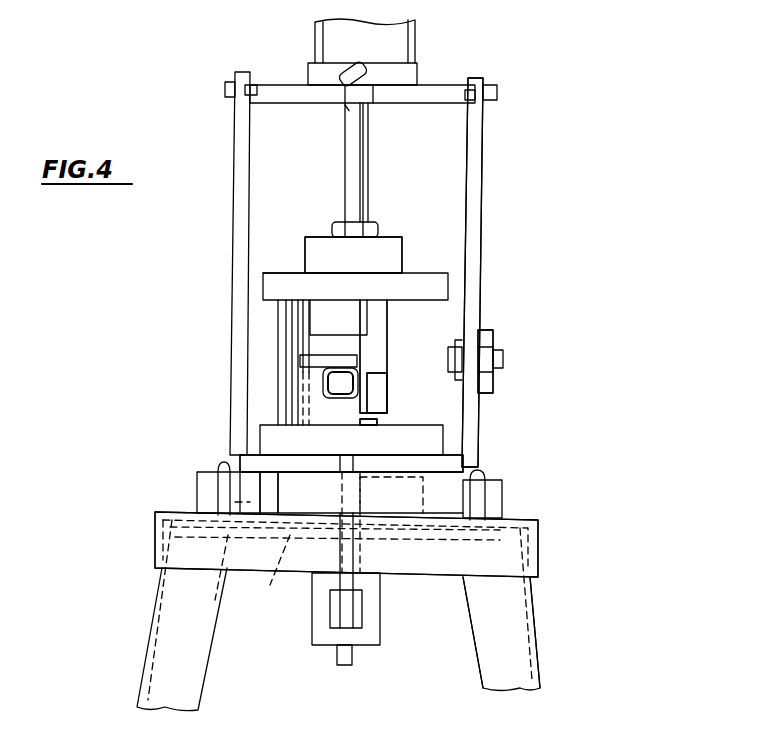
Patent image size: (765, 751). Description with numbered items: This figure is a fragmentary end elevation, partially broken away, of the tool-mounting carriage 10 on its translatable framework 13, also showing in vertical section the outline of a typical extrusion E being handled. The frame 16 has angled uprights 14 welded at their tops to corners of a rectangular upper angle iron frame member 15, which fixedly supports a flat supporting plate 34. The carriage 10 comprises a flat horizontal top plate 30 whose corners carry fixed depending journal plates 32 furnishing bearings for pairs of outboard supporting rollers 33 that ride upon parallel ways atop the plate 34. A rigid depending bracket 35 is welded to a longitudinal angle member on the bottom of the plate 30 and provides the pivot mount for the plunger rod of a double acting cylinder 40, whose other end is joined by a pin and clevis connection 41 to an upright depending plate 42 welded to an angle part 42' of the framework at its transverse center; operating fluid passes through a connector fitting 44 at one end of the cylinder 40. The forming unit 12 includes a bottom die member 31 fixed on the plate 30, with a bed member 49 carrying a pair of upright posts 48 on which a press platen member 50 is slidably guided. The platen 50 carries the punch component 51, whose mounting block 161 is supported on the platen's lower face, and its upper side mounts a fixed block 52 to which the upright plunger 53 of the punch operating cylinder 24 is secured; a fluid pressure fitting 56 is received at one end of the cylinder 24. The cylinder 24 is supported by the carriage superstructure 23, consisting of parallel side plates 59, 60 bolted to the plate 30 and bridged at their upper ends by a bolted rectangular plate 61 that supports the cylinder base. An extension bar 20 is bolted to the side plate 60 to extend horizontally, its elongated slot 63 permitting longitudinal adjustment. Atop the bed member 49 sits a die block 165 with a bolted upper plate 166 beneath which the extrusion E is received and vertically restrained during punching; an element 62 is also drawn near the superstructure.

The reciprocable carriage 10 is at (487, 455).
The forming unit 12 is at (413, 272).
The translatable framework 13 is at (538, 620).
The angled uprights 14 is at (158, 665).
The upper angle iron frame member 15 is at (155, 538).
The frame 16 is at (543, 538).
The extension bar 20 is at (495, 383).
The carriage superstructure 23 is at (487, 271).
The punch operating cylinder 24 is at (345, 45).
The top plate 30 is at (398, 452).
The bottom die member 31 is at (336, 431).
The journal plates 32 is at (248, 473).
The outboard supporting rollers 33 is at (212, 490).
The flat supporting plate 34 is at (252, 576).
The depending bracket 35 is at (342, 490).
The double acting cylinder 40 is at (312, 630).
The pin and clevis connection 41 is at (358, 620).
The upright depending plate 42 is at (319, 603).
The angle part 42' is at (335, 513).
The connector fitting 44 is at (347, 655).
The upright posts 48 is at (330, 317).
The bed member 49 is at (437, 448).
The press platen member 50 is at (282, 278).
The punch component 51 is at (352, 298).
The fixed block 52 is at (380, 245).
The upright plunger 53 is at (366, 155).
The fluid pressure fitting 56 is at (367, 72).
The side plate 59 is at (240, 232).
The side plate 60 is at (478, 210).
The rectangular plate 61 is at (445, 88).
The opening 62 is at (348, 114).
The elongated slot 63 is at (493, 340).
The mounting block 161 is at (350, 322).
The die block 165 is at (318, 420).
The upper plate 166 is at (355, 288).
The extrusion E is at (322, 385).